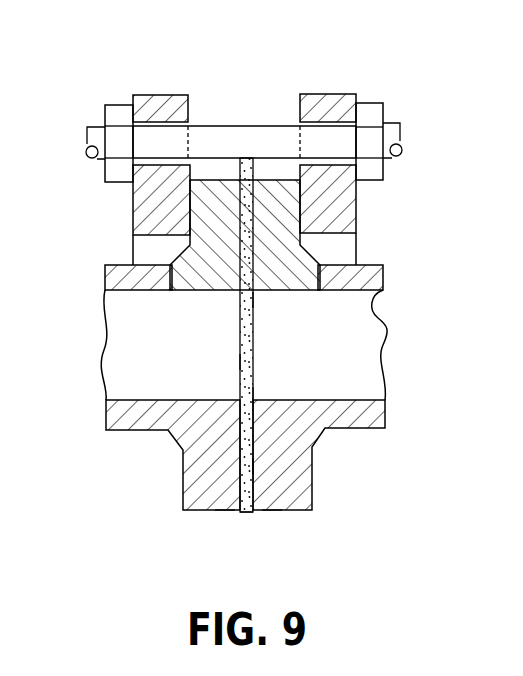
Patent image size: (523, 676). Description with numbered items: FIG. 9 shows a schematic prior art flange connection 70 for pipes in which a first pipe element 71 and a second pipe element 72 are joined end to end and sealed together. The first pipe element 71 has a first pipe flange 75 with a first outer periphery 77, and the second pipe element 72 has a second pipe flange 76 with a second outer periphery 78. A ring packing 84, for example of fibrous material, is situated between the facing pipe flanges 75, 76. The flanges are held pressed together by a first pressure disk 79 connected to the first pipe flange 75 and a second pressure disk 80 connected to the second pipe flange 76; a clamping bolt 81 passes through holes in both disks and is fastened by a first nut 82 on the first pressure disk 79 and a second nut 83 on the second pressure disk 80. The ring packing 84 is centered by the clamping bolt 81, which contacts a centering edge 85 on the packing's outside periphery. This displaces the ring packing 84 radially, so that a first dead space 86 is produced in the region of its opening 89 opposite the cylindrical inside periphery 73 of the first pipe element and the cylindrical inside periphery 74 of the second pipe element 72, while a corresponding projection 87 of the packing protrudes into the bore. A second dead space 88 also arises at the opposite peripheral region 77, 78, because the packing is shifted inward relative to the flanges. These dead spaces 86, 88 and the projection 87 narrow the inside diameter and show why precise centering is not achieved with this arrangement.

The flange connection 70 is at (238, 88).
The first pipe element 71 is at (384, 272).
The second pipe element 72 is at (112, 277).
The cylindrical inside periphery 73 is at (386, 318).
The cylindrical inside periphery 74 is at (200, 290).
The first pipe flange 75 is at (305, 503).
The second pipe flange 76 is at (225, 500).
The first outer periphery 77 is at (272, 512).
The second outer periphery 78 is at (186, 514).
The first pressure disk 79 is at (352, 215).
The second pressure disk 80 is at (140, 212).
The clamping bolt 81 is at (212, 130).
The first nut 82 is at (378, 110).
The second nut 83 is at (118, 108).
The ring packing 84 is at (255, 467).
The centering edge 85 is at (248, 157).
The first dead space 86 is at (253, 300).
The projection 87 is at (253, 395).
The second dead space 88 is at (246, 512).
The opening 89 is at (245, 362).